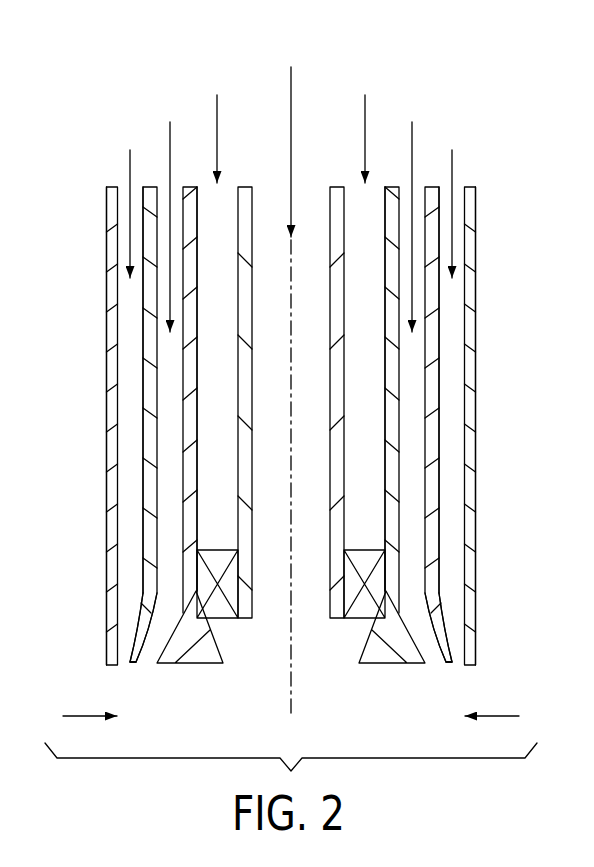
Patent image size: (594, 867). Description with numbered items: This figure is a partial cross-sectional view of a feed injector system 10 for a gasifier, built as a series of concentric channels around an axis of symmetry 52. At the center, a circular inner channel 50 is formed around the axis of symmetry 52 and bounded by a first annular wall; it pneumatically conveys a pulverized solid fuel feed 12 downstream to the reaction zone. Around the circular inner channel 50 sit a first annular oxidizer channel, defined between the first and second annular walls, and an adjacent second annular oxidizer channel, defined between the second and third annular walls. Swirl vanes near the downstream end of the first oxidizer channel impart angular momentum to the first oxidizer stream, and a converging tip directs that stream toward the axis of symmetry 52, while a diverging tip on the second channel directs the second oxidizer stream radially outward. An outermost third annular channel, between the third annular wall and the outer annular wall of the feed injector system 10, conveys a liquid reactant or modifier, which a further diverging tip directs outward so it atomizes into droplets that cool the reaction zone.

The feed injector system 10 is at (115, 62).
The pulverized solid fuel feed 12 is at (290, 147).
The circular inner channel 50 is at (310, 200).
The axis of symmetry 52 is at (292, 682).